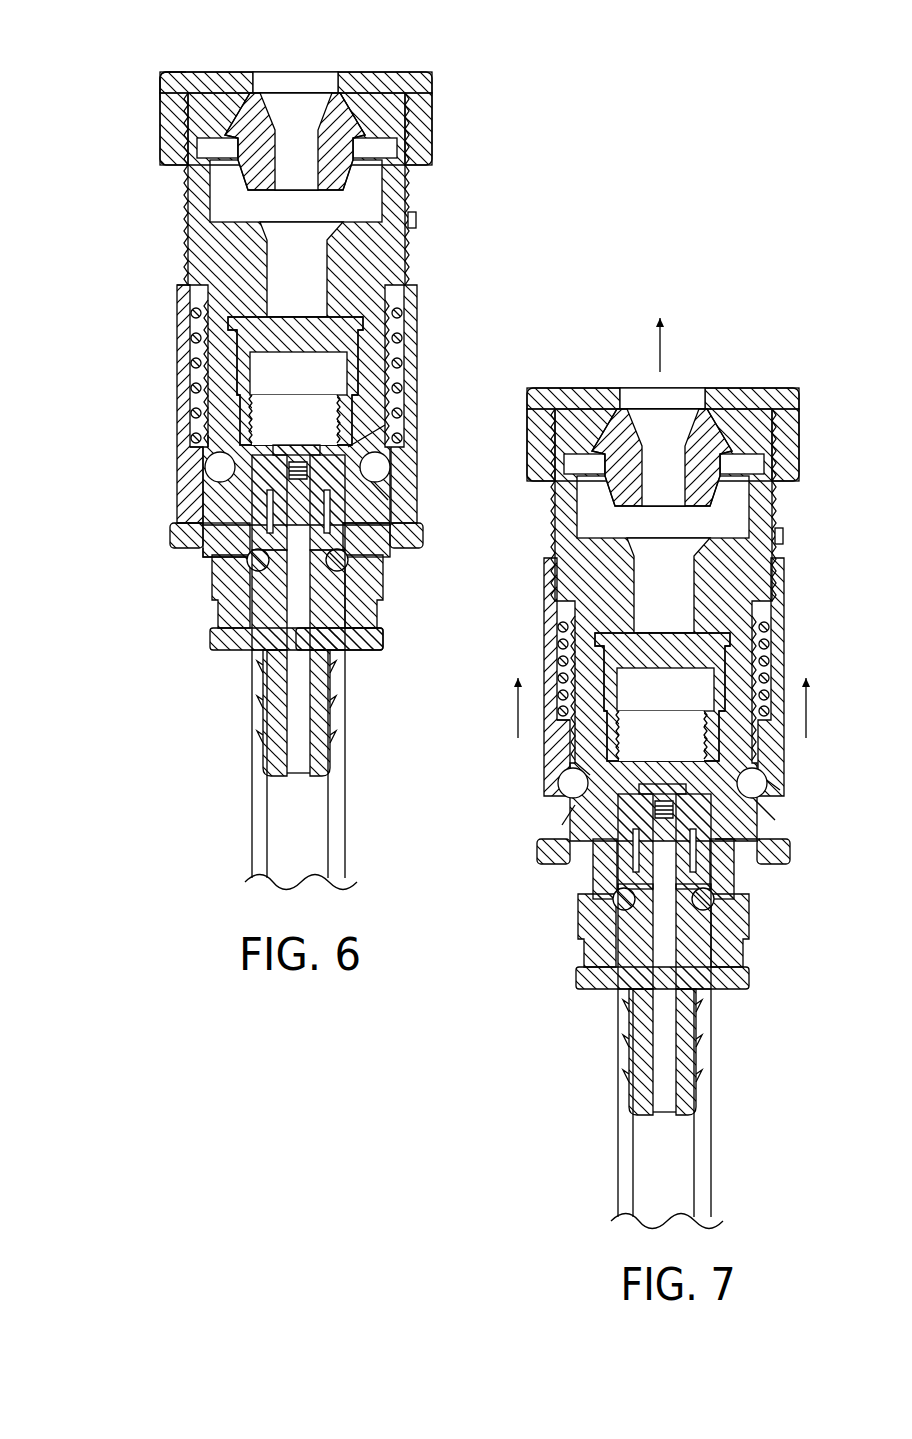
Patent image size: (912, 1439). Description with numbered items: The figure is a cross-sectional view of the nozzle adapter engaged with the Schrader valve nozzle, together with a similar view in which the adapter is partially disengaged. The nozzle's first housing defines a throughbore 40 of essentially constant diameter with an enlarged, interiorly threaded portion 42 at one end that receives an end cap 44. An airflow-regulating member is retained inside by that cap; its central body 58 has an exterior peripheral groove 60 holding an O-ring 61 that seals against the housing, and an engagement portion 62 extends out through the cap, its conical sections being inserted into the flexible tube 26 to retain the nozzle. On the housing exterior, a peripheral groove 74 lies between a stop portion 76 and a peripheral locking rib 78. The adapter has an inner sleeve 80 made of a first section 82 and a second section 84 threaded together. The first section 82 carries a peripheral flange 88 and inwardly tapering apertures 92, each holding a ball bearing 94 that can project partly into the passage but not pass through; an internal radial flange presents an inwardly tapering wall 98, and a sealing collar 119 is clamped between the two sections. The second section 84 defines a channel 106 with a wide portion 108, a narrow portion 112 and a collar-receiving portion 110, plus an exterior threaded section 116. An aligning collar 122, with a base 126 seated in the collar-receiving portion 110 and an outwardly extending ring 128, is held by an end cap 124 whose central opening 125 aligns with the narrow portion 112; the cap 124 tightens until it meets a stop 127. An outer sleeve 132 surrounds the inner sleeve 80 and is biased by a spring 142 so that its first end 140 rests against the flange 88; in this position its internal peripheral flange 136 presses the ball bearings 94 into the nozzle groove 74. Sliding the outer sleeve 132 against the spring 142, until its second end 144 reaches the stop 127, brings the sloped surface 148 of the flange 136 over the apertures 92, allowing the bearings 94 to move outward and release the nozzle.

In FIG. 6, the flexible tube 26 is at (258, 818).
In FIG. 7, the flexible tube 26 is at (704, 1152).
In FIG. 6, the throughbore 40 is at (190, 410).
In FIG. 7, the throughbore 40 is at (645, 724).
In FIG. 6, the enlarged portion 42 is at (225, 629).
In FIG. 6, the end cap 44 is at (352, 652).
In FIG. 7, the end cap 44 is at (585, 991).
In FIG. 6, the central body 58 is at (246, 597).
In FIG. 6, the exterior peripheral groove 60 is at (362, 582).
In FIG. 6, the O-ring 61 is at (348, 575).
In FIG. 6, the engagement portion 62 is at (262, 720).
In FIG. 6, the peripheral groove 74 is at (345, 440).
In FIG. 7, the peripheral groove 74 is at (612, 832).
In FIG. 6, the stop portion 76 is at (413, 518).
In FIG. 7, the stop portion 76 is at (790, 838).
In FIG. 6, the peripheral locking rib 78 is at (392, 452).
In FIG. 7, the peripheral locking rib 78 is at (568, 806).
In FIG. 6, the inner sleeve 80 is at (410, 278).
In FIG. 6, the first section 82 is at (186, 549).
In FIG. 6, the second section 84 is at (190, 268).
In FIG. 6, the peripheral flange 88 is at (172, 530).
In FIG. 7, the peripheral flange 88 is at (770, 866).
In FIG. 6, the inwardly tapering apertures 92 is at (390, 480).
In FIG. 6, the ball bearings 94 is at (176, 492).
In FIG. 7, the ball bearings 94 is at (766, 790).
In FIG. 7, the inwardly tapering wall 98 is at (568, 800).
In FIG. 6, the channel 106 is at (230, 180).
In FIG. 6, the wide portion 108 is at (192, 372).
In FIG. 6, the collar-receiving portion 110 is at (220, 208).
In FIG. 6, the narrow portion 112 is at (277, 292).
In FIG. 6, the exterior threaded section 116 is at (406, 180).
In FIG. 6, the sealing collar 119 is at (180, 447).
In FIG. 6, the aligning collar 122 is at (270, 114).
In FIG. 7, the aligning collar 122 is at (586, 428).
In FIG. 6, the end cap 124 is at (227, 77).
In FIG. 7, the end cap 124 is at (742, 405).
In FIG. 6, the central opening 125 is at (340, 90).
In FIG. 7, the central opening 125 is at (634, 406).
In FIG. 6, the base 126 is at (361, 117).
In FIG. 6, the stop 127 is at (413, 218).
In FIG. 7, the stop 127 is at (785, 537).
In FIG. 6, the outwardly extending ring 128 is at (168, 78).
In FIG. 6, the outer sleeve 132 is at (178, 300).
In FIG. 7, the outer sleeve 132 is at (790, 600).
In FIG. 6, the peripheral flange 136 is at (177, 458).
In FIG. 7, the peripheral flange 136 is at (782, 756).
In FIG. 6, the first end 140 is at (177, 515).
In FIG. 7, the first end 140 is at (786, 806).
In FIG. 6, the spring 142 is at (188, 380).
In FIG. 7, the spring 142 is at (563, 640).
In FIG. 6, the second end 144 is at (177, 287).
In FIG. 7, the sloped surface 148 is at (790, 772).